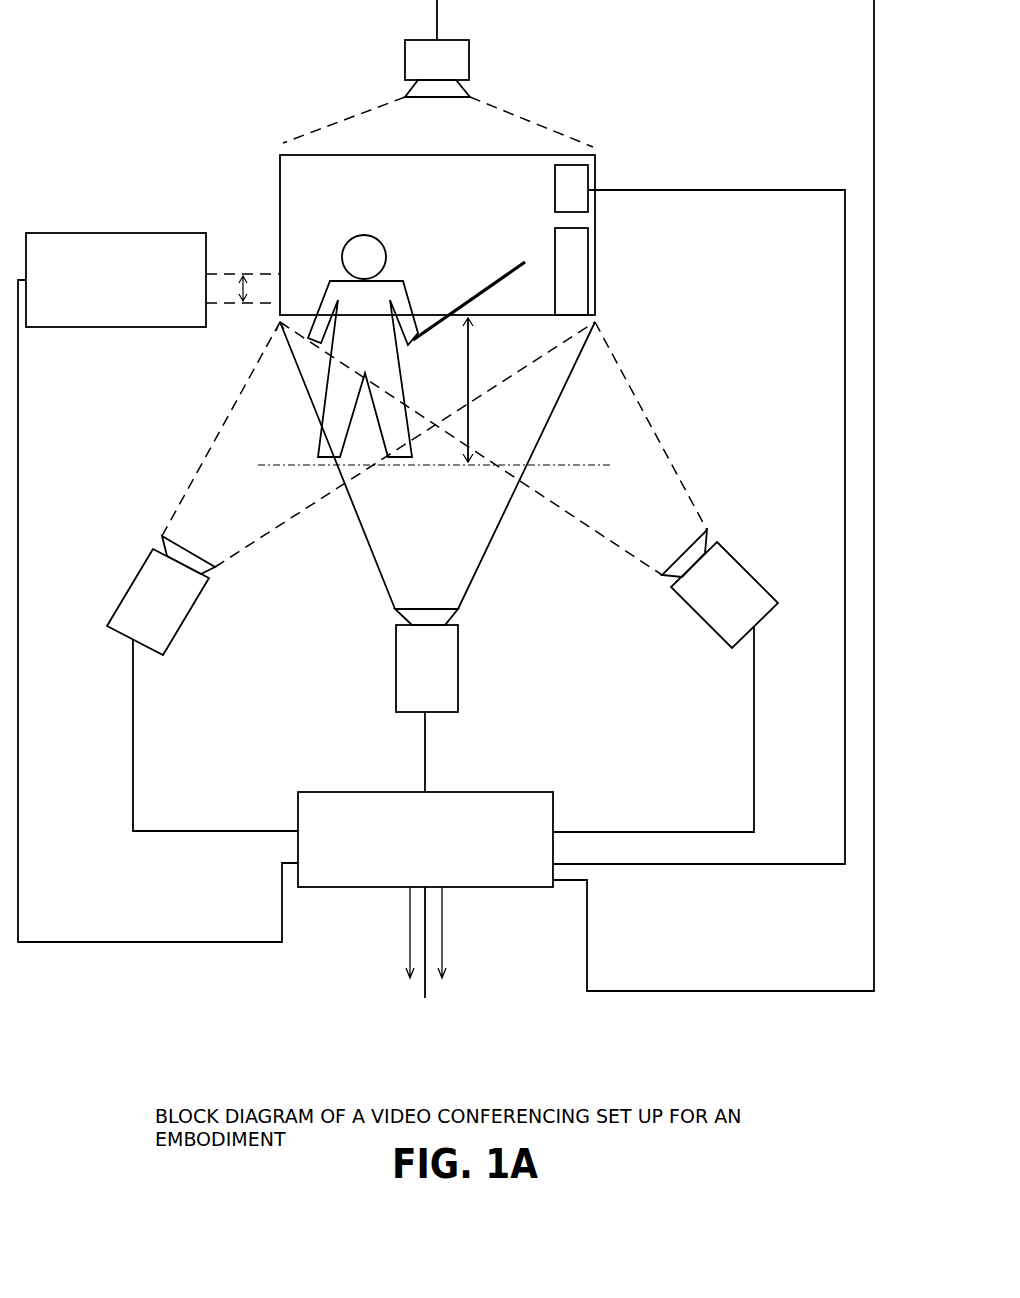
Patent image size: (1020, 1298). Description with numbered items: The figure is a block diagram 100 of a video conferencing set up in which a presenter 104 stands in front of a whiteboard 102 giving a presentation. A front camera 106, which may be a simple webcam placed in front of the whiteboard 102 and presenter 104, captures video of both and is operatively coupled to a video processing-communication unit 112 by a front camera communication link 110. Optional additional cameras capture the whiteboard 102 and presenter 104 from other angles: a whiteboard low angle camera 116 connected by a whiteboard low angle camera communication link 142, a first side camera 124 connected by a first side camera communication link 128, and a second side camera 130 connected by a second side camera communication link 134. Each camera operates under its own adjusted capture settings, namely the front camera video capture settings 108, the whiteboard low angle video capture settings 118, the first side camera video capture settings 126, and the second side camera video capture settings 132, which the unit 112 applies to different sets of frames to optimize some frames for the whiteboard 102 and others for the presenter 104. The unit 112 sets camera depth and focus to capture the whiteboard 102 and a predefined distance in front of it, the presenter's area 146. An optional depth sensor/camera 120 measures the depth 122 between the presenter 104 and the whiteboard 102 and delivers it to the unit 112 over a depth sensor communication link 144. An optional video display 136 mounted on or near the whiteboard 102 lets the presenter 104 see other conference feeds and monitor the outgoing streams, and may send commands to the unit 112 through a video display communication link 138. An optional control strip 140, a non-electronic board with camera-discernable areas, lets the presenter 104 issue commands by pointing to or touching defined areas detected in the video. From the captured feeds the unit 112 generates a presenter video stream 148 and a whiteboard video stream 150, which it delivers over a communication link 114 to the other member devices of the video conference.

The block diagram 100 is at (52, 1072).
The whiteboard 102 is at (437, 235).
The presenter 104 is at (355, 341).
The front camera 106 is at (463, 665).
The front camera video capture settings 108 is at (356, 545).
The front camera communication link 110 is at (423, 733).
The video processing-communication unit 112 is at (425, 839).
The communication link to other member devices 114 is at (425, 992).
The whiteboard low angle camera 116 is at (470, 62).
The whiteboard low angle video capture settings 118 is at (334, 112).
The depth sensor/camera 120 is at (116, 279).
The depth 122 is at (231, 284).
The side camera 1 124 is at (117, 631).
The side camera 1 video capture settings 126 is at (204, 441).
The side camera 1 communication link 128 is at (180, 836).
The side camera 2 130 is at (752, 567).
The side camera 2 video capture settings 132 is at (677, 454).
The side camera 2 communication link 134 is at (645, 829).
The video display 136 is at (575, 177).
The video display communication link 138 is at (731, 895).
The control strip 140 is at (577, 272).
The whiteboard low angle camera communication link 142 is at (740, 995).
The depth sensor communication link 144 is at (190, 946).
The presenter's area 146 is at (472, 348).
The presenter video stream 148 is at (408, 907).
The whiteboard video stream 150 is at (448, 905).